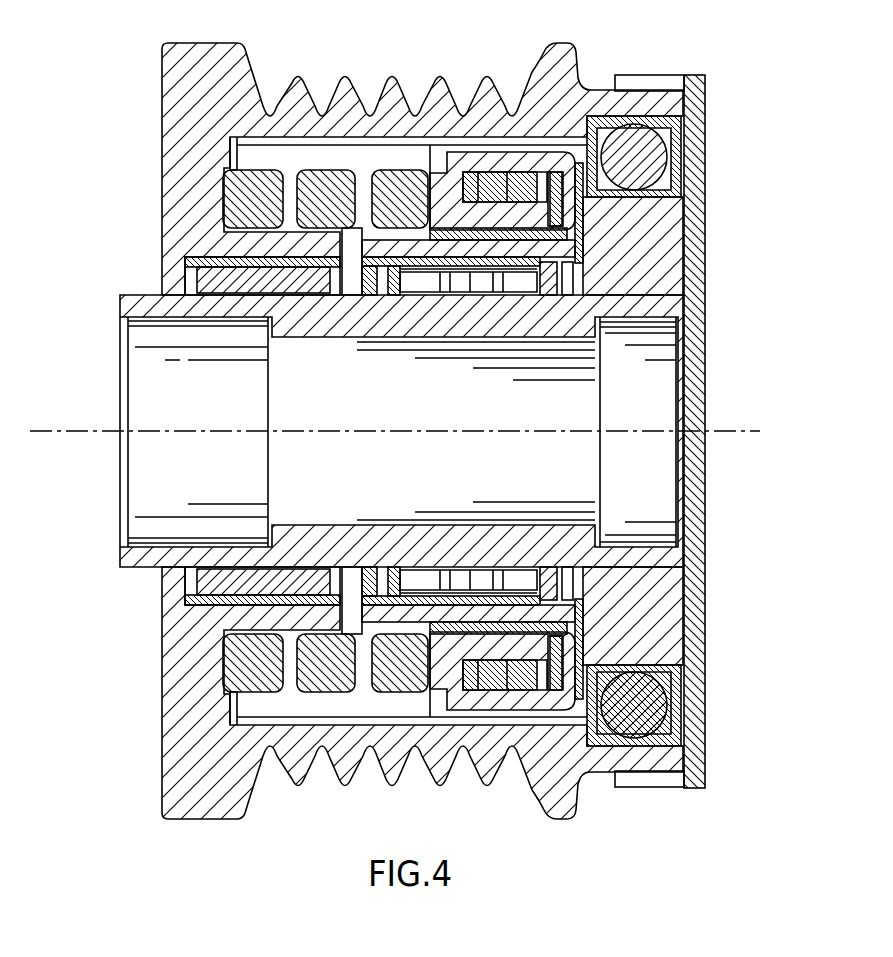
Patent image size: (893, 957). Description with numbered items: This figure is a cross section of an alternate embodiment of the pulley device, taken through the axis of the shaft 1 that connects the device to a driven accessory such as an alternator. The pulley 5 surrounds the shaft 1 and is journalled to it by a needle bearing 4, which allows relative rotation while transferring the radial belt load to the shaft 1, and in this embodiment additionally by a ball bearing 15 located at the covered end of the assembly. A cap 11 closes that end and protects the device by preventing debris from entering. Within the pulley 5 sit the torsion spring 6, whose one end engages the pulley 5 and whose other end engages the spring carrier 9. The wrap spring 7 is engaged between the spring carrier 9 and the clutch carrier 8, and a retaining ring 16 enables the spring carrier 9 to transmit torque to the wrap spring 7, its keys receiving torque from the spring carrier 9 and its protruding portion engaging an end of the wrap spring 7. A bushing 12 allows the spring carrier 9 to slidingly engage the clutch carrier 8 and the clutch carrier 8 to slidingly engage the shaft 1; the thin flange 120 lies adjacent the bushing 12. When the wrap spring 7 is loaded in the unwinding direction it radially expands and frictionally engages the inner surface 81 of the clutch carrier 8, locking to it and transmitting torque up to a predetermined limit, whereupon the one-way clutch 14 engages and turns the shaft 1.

The shaft 1 is at (135, 308).
The needle bearing 4 is at (202, 283).
The pulley 5 is at (175, 223).
The torsion spring 6 is at (243, 193).
The wrap spring 7 is at (477, 177).
The clutch carrier 8 is at (510, 167).
The spring carrier 9 is at (410, 167).
The cap 11 is at (692, 172).
The bushing 12 is at (582, 90).
The one-way clutch 14 is at (570, 283).
The ball bearing 15 is at (634, 153).
The retaining ring 16 is at (545, 172).
The inner surface 81 is at (525, 690).
The flange 120 is at (590, 228).